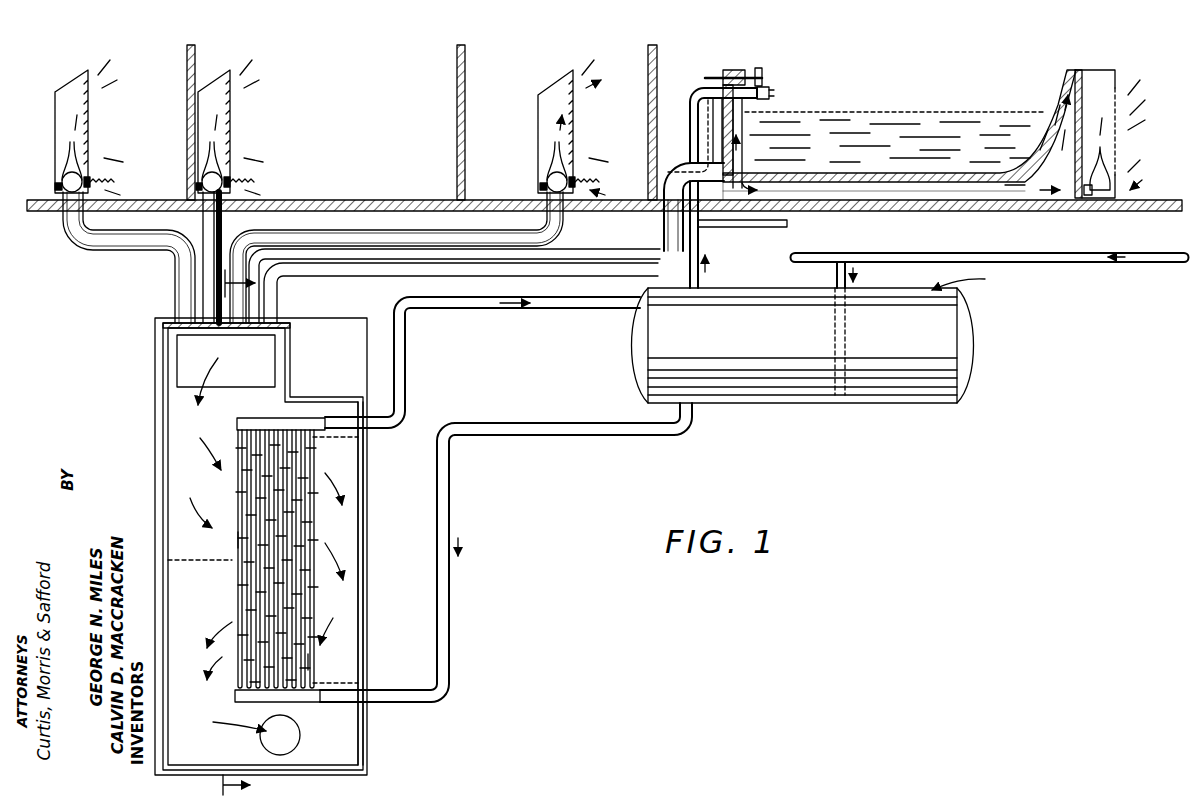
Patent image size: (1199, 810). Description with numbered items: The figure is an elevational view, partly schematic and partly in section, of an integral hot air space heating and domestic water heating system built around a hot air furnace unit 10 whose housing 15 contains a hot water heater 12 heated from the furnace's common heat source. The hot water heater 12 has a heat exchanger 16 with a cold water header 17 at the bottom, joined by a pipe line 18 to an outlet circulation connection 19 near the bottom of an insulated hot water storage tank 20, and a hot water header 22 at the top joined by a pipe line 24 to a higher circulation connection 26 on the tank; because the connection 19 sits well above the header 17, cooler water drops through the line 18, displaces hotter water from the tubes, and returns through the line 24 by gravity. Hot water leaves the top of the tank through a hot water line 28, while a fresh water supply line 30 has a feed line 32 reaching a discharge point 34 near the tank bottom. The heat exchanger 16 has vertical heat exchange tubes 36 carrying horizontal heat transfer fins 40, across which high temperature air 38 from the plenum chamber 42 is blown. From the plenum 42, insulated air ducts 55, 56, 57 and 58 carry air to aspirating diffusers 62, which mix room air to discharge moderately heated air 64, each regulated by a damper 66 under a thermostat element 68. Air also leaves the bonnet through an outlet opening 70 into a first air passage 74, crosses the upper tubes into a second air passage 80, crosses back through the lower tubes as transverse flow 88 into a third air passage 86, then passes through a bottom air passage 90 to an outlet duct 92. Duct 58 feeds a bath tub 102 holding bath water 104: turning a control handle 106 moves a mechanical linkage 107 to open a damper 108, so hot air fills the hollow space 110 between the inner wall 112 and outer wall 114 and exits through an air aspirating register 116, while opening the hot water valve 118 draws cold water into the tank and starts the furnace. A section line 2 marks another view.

The section line 2 is at (244, 529).
The hot air furnace unit 10 is at (368, 507).
The hot water heater 12 is at (363, 552).
The housing 15 is at (368, 607).
The heat exchanger 16 is at (313, 464).
The cold water header 17 is at (303, 703).
The pipe line 18 is at (452, 600).
The outlet circulation connection 19 is at (690, 412).
The hot water storage tank 20 is at (971, 279).
The hot water header 22 is at (293, 418).
The pipe line 24 is at (406, 334).
The circulation connection 26 is at (640, 308).
The hot water line 28 is at (700, 247).
The fresh water supply line 30 is at (1037, 263).
The feed line 32 is at (835, 274).
The discharge point 34 is at (845, 400).
The heat exchange tubes 36 is at (312, 516).
The hot air 38 is at (199, 443).
The heat transfer fins 40 is at (248, 540).
The plenum chamber 42 is at (290, 345).
The insulated air duct 55 is at (129, 257).
The insulated air duct 56 is at (203, 222).
The insulated air duct 57 is at (348, 230).
The insulated air duct 58 is at (362, 275).
The aspirating diffuser 62 is at (80, 79).
The moderately heated air 64 is at (114, 92).
The damper 66 is at (63, 177).
The thermostat element 68 is at (114, 181).
The outlet opening 70 is at (231, 388).
The first air passage 74 is at (200, 484).
The second air passage 80 is at (345, 618).
The third air passage 86 is at (202, 651).
The transverse air flow 88 is at (225, 723).
The bottom air passage 90 is at (247, 764).
The outlet duct 92 is at (291, 746).
The bath tub 102 is at (1064, 82).
The bath water 104 is at (906, 110).
The control handle 106 is at (757, 72).
The mechanical linkage 107 is at (697, 90).
The damper 108 is at (690, 165).
The hollow space 110 is at (886, 186).
The inner wall 112 is at (910, 178).
The outer wall 114 is at (960, 205).
The air aspirating register 116 is at (1115, 72).
The hot water valve 118 is at (772, 92).